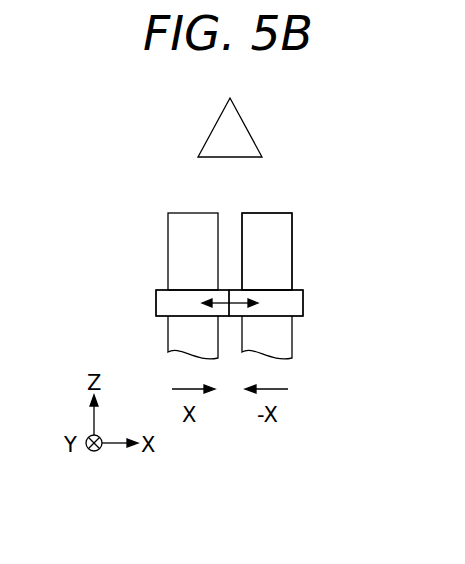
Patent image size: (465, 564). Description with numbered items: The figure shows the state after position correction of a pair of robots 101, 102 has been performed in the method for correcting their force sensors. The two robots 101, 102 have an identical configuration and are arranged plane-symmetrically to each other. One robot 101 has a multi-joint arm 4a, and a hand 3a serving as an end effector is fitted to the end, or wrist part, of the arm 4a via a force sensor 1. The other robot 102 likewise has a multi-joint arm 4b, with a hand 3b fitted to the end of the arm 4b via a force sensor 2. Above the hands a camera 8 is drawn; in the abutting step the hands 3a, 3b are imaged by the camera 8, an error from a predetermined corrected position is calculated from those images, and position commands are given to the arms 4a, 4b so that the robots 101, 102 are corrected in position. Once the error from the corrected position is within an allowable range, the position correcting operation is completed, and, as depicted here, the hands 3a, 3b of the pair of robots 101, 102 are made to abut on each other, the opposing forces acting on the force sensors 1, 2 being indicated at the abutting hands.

The camera 8 is at (212, 118).
The robot 102 is at (303, 195).
The robot 101 is at (92, 330).
The hand 3a is at (168, 220).
The hand 3b is at (292, 225).
The force sensor 1 is at (156, 294).
The force sensor 2 is at (303, 300).
The multi-joint arm 4a is at (168, 340).
The multi-joint arm 4b is at (292, 340).